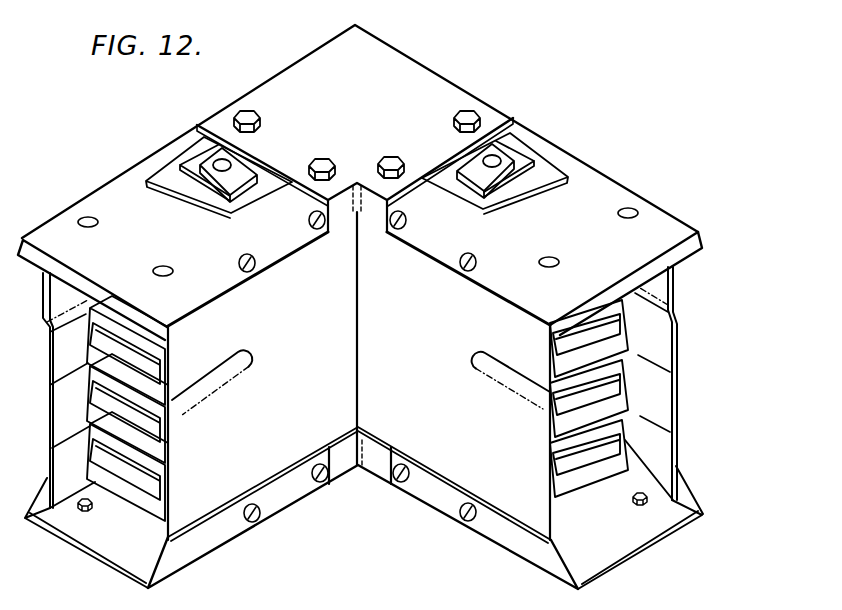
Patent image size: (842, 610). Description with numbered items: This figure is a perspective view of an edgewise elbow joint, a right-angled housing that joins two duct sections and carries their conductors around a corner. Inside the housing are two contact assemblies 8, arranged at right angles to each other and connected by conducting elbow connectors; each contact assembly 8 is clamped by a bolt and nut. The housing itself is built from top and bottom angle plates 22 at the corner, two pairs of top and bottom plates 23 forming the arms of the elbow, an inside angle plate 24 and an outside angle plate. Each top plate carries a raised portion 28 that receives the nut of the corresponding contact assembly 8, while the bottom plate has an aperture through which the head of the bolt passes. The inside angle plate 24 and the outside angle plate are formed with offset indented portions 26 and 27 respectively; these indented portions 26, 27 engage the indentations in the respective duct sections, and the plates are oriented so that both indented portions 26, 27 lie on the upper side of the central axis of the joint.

The contact assembly 8 is at (87, 398).
The angle plate 22 is at (343, 48).
The top and bottom plate 23 is at (111, 191).
The inside angle plate 24 is at (326, 353).
The indented portion 26 is at (203, 387).
The indented portion 27 is at (44, 332).
The raised portion 28 is at (200, 152).